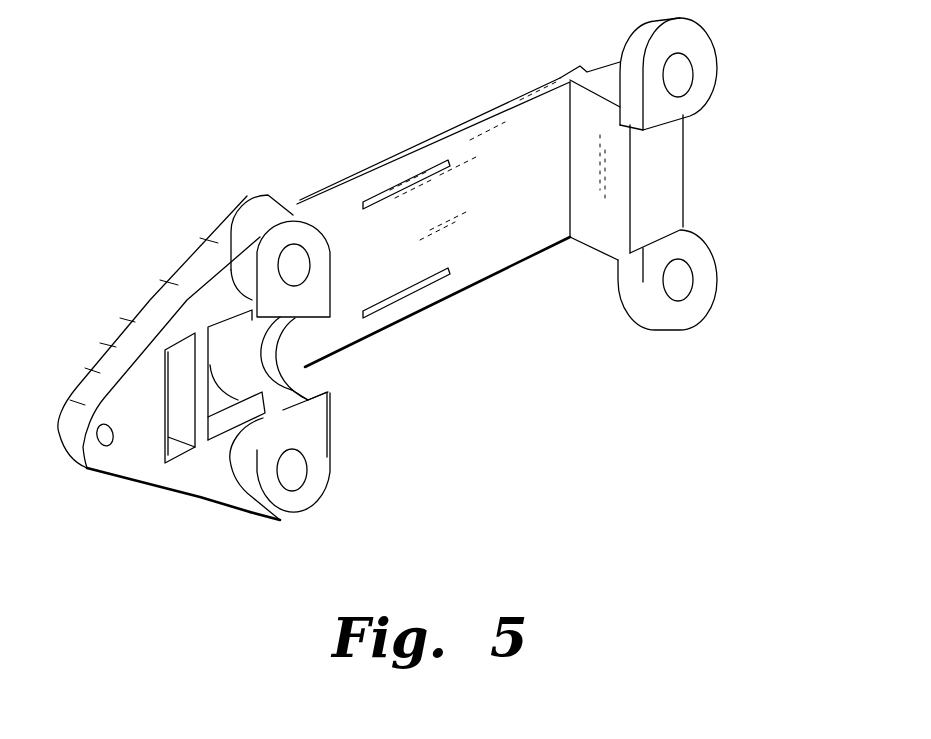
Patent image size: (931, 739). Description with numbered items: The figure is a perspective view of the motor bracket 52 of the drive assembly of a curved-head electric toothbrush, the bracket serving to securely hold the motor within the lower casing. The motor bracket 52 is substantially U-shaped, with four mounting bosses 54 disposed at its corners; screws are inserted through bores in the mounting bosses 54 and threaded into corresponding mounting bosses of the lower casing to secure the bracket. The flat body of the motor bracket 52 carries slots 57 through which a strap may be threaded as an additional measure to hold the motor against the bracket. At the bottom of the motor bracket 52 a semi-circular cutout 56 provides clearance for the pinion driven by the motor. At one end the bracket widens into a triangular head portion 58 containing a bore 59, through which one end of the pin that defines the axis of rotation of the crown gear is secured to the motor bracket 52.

The motor bracket 52 is at (482, 108).
The mounting bosses 54 is at (278, 258).
The semi-circular cutout 56 is at (327, 381).
The slots 57 is at (425, 186).
The triangular head portion 58 is at (148, 302).
The bore 59 is at (103, 448).